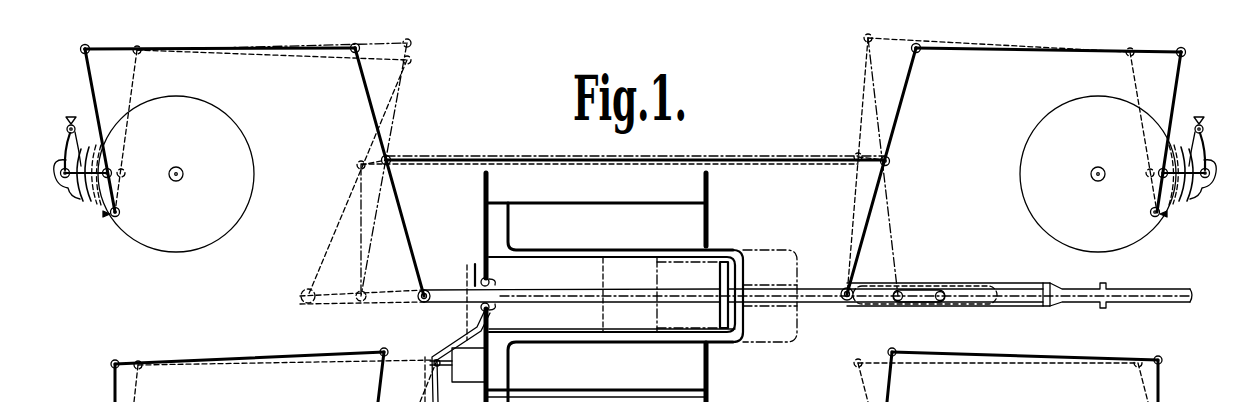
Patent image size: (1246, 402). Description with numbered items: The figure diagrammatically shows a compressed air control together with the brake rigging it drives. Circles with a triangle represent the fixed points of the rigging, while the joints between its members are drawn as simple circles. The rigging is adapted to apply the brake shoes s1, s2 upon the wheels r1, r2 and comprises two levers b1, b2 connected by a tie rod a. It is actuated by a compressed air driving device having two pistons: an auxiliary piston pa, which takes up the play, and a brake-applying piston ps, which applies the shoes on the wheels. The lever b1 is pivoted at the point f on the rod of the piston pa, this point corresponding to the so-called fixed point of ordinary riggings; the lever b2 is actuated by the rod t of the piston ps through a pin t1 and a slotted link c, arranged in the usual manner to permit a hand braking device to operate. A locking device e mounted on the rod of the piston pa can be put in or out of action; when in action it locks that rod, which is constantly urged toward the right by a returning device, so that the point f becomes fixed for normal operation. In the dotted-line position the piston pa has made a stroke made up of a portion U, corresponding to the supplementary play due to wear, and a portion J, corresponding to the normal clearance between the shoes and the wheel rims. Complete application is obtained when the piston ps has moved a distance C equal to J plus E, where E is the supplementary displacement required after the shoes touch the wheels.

The tie rod a is at (780, 160).
The lever b1 is at (402, 241).
The lever b2 is at (872, 223).
The slotted link c is at (935, 288).
The locking device e is at (493, 278).
The pivot point f is at (428, 286).
The auxiliary piston pa is at (718, 268).
The brake-applying piston ps is at (748, 327).
The wheel r1 is at (211, 237).
The wheel r2 is at (1150, 232).
The brake shoe s1 is at (77, 200).
The brake shoe s2 is at (1192, 198).
The piston rod t is at (813, 292).
The pin t1 is at (845, 300).
The stroke portion J is at (424, 302).
The stroke portion U is at (388, 325).
The supplementary displacement E is at (919, 313).
The piston stroke distance C is at (940, 344).